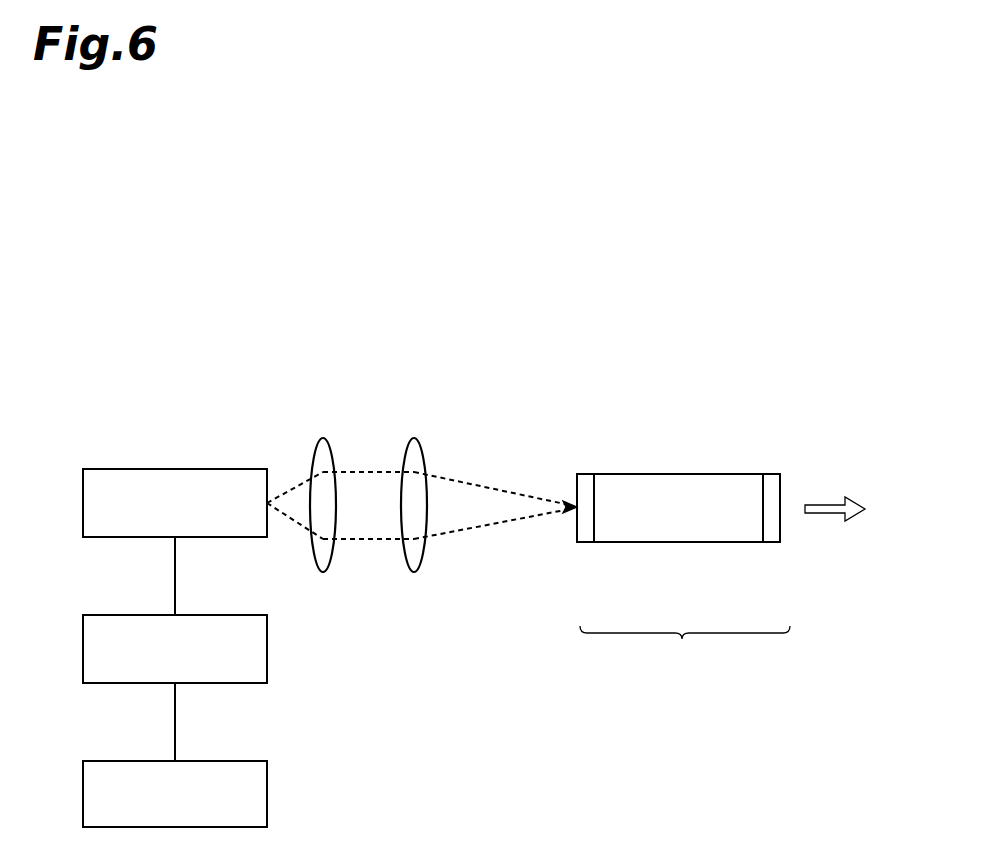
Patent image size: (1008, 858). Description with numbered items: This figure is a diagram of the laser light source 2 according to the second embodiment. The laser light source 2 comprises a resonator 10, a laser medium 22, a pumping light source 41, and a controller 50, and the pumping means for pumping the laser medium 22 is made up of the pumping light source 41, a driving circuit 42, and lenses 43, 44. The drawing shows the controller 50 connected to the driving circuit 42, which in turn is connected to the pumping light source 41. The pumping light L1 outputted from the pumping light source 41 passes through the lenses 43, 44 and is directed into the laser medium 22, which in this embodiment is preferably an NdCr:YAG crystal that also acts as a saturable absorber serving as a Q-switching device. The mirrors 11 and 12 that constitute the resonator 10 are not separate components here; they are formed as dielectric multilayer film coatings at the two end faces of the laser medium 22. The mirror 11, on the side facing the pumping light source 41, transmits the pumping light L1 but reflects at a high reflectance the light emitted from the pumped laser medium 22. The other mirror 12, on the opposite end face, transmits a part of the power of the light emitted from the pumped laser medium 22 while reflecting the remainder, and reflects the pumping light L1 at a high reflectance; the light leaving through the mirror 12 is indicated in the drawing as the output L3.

The laser light source 2 is at (632, 338).
The resonator 10 is at (685, 652).
The mirror 11 is at (588, 542).
The mirror 12 is at (770, 542).
The laser medium 22 is at (650, 474).
The pumping light source 41 is at (130, 469).
The driving circuit 42 is at (130, 615).
The lens 43 is at (328, 438).
The lens 44 is at (418, 438).
The controller 50 is at (130, 761).
The pumping light L1 is at (488, 486).
The laser light L3 is at (828, 500).